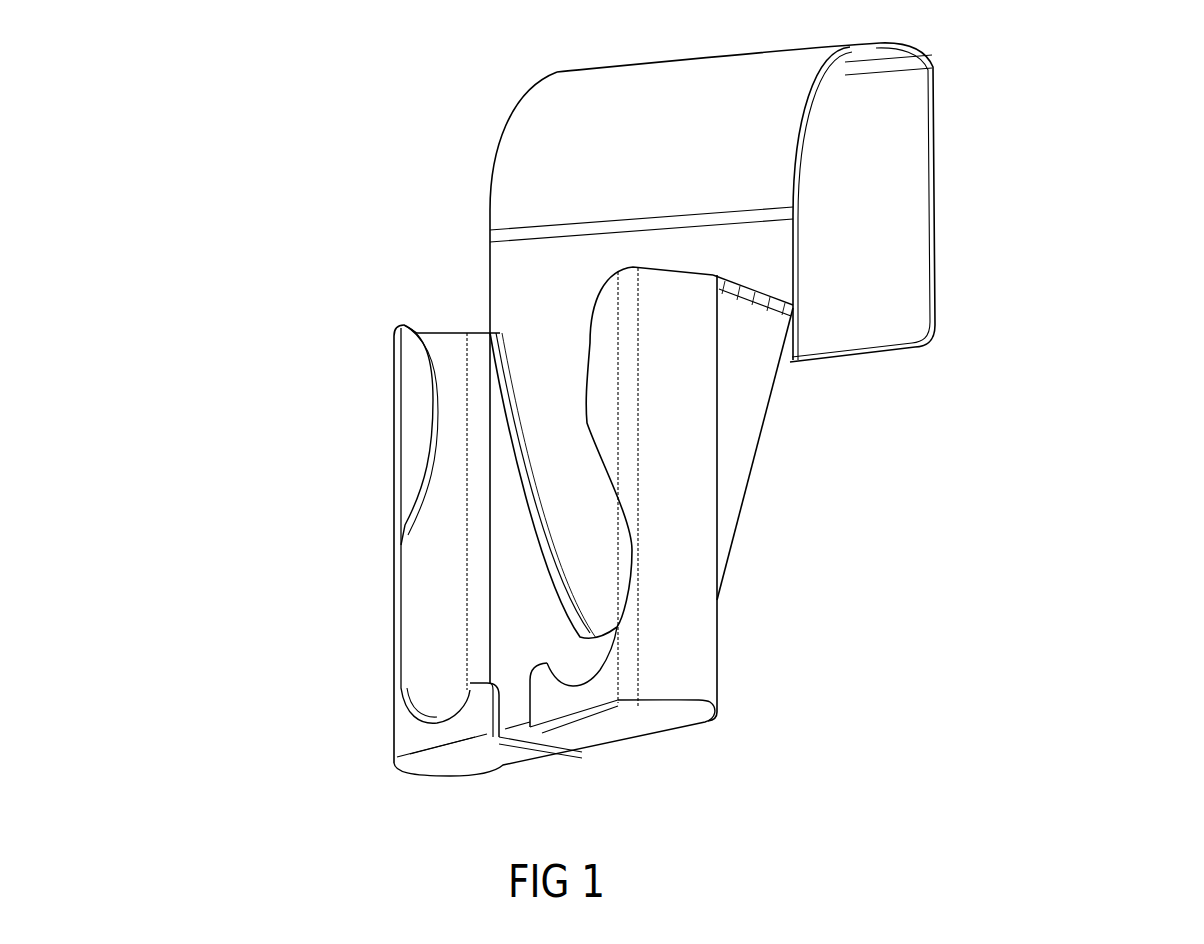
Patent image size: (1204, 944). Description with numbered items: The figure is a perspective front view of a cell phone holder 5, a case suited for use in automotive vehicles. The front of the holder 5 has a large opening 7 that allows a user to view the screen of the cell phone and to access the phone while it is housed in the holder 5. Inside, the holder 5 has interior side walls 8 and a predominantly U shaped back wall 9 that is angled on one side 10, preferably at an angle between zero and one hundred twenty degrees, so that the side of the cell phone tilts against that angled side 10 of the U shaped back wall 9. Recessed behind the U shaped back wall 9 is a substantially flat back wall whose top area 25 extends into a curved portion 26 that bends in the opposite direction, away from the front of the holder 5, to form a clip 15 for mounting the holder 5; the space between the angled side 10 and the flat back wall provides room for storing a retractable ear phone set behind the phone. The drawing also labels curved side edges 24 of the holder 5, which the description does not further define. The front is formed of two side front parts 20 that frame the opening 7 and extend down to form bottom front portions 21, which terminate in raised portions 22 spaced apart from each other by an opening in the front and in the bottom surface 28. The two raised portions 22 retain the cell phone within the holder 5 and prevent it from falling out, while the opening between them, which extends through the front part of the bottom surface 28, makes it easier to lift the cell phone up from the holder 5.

The cell phone holder 5 is at (758, 448).
The large opening 7 is at (447, 567).
The interior side walls 8 is at (433, 343).
The U shaped back wall 9 is at (493, 447).
The angled side 10 is at (743, 389).
The clip 15 is at (933, 112).
The side front parts 20 is at (407, 714).
The bottom front portions 21 is at (475, 713).
The raised portions 22 is at (483, 685).
The curved side flange 24 is at (397, 371).
The top area 25 is at (490, 247).
The curved portion 26 is at (510, 133).
The bottom surface 28 is at (490, 760).